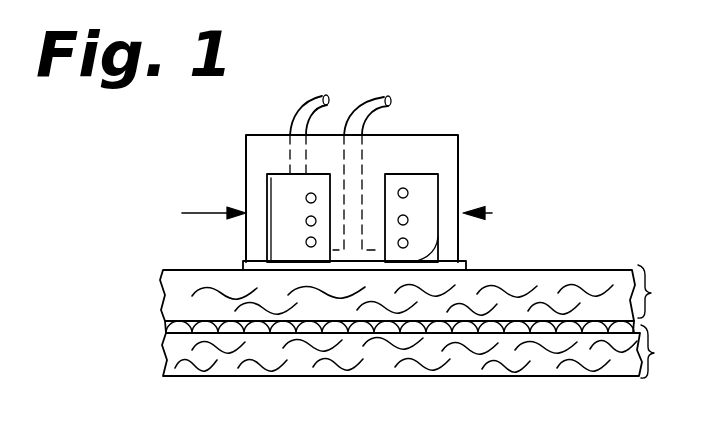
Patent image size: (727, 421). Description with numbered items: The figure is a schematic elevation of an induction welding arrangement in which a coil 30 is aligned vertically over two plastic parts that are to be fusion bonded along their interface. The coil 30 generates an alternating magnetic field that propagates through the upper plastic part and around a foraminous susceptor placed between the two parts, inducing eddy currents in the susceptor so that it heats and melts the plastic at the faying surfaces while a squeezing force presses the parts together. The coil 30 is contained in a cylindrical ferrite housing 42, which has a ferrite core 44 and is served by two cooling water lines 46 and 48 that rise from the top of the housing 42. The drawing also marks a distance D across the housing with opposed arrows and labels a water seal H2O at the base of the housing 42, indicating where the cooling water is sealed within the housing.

The coil 30 is at (408, 192).
The ferrite housing 42 is at (434, 142).
The ferrite core 44 is at (335, 188).
The cooling water line 46 is at (303, 100).
The cooling water line 48 is at (386, 100).
The distance D is at (492, 213).
The water seal H2O is at (438, 237).